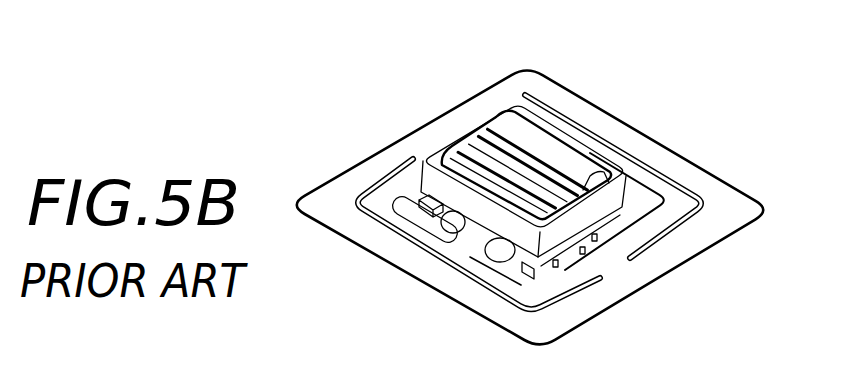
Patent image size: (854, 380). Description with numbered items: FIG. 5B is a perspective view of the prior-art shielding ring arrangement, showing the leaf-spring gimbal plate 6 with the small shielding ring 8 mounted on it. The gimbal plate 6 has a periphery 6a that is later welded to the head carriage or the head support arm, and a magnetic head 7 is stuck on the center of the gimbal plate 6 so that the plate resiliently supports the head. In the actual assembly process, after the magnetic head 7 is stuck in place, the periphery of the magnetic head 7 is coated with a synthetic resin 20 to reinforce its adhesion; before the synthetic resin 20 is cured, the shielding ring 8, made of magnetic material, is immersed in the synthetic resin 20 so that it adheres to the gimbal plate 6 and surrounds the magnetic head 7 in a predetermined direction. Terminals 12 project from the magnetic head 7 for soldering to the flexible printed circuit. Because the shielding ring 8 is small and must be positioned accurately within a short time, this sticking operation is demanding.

The gimbal plate 6 is at (688, 157).
The periphery 6a is at (682, 248).
The magnetic head 7 is at (457, 158).
The shielding ring 8 is at (612, 203).
The terminals 12 is at (537, 268).
The synthetic resin 20 is at (453, 226).